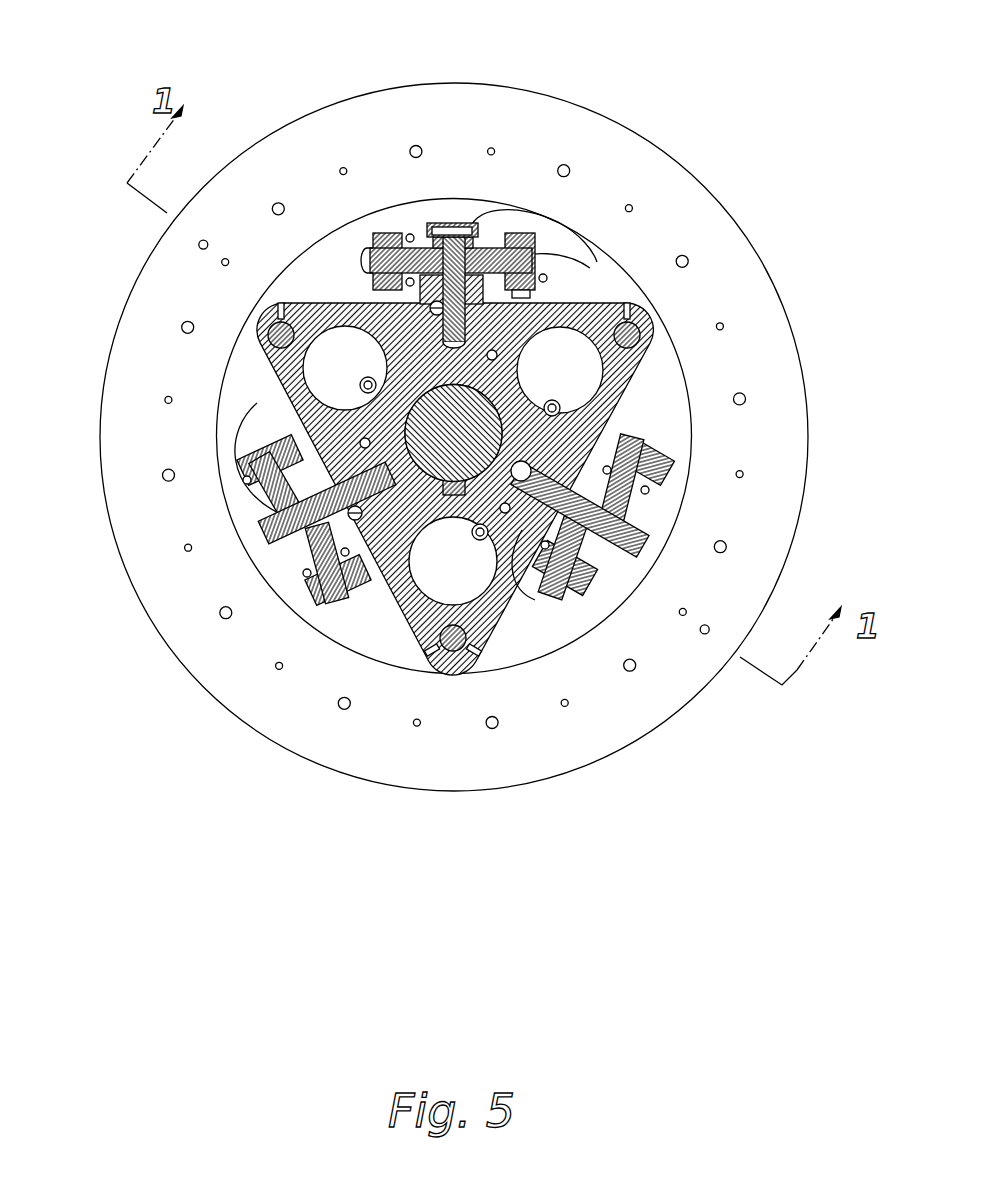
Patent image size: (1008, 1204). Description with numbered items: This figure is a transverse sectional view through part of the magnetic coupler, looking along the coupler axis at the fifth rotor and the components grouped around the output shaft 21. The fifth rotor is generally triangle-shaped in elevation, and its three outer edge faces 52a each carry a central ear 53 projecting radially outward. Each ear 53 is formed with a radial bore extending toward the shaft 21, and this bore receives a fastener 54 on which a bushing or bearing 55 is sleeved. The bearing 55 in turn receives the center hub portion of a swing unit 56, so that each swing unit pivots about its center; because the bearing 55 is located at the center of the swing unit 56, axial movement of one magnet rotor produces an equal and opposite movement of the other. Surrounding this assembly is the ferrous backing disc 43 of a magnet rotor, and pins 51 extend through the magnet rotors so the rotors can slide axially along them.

The ferrous backing disc 43 is at (330, 128).
The pins 51 is at (610, 316).
The outer edge faces 52a is at (652, 392).
The output shaft 21 is at (410, 436).
The bushings or bearings 55 is at (662, 468).
The fasteners 54 is at (645, 520).
The swing units 56 is at (587, 566).
The central ear 53 is at (551, 578).